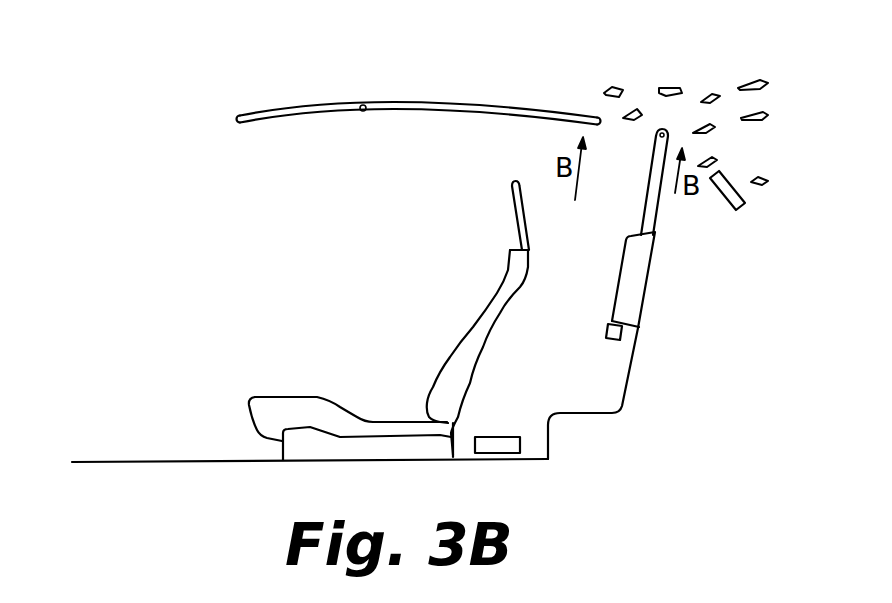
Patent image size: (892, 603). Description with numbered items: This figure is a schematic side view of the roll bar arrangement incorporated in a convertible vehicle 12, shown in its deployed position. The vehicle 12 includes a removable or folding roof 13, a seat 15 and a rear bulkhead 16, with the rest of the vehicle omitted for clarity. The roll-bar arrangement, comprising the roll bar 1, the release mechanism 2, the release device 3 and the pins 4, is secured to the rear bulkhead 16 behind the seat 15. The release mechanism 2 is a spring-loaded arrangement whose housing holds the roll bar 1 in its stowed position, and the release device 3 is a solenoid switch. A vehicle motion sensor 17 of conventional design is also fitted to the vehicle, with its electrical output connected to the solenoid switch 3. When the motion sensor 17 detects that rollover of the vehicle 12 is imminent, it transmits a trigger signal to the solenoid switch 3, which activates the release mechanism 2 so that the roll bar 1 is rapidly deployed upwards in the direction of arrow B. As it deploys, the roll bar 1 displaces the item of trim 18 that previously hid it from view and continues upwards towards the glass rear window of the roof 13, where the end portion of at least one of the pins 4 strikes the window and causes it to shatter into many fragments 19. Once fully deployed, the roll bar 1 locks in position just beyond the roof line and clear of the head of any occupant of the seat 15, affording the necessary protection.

The roll bar 1 is at (651, 182).
The roll bar release mechanism 2 is at (618, 288).
The release device 3 is at (608, 335).
The pin 4 is at (639, 145).
The convertible vehicle 12 is at (114, 289).
The roof 13 is at (447, 91).
The seat 15 is at (470, 338).
The rear bulkhead 16 is at (632, 380).
The vehicle motion sensor 17 is at (496, 440).
The item of trim 18 is at (725, 211).
The fragments 19 is at (708, 79).